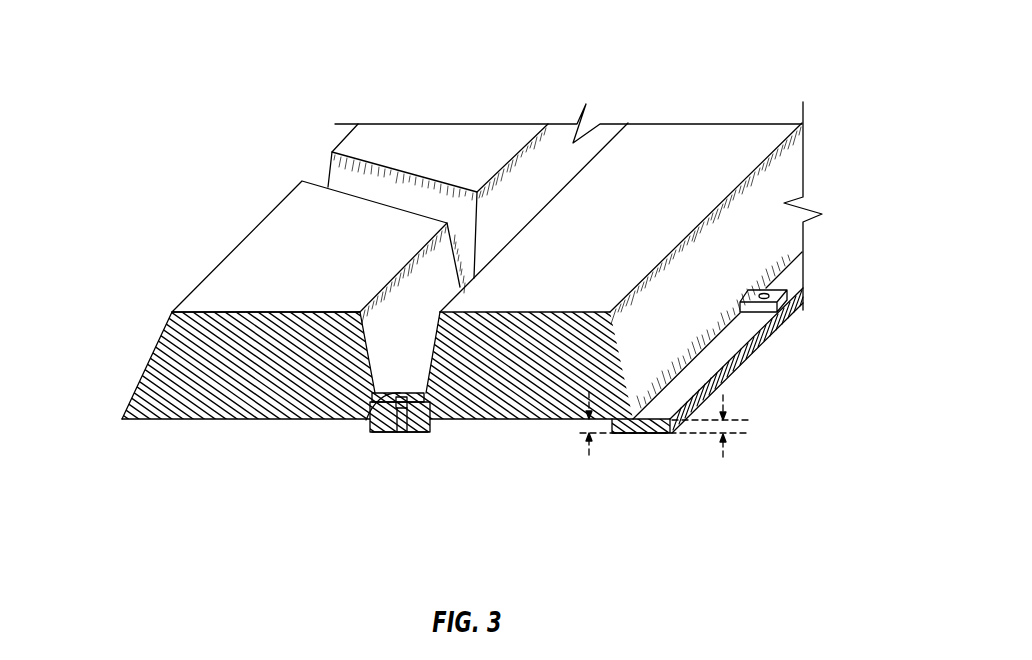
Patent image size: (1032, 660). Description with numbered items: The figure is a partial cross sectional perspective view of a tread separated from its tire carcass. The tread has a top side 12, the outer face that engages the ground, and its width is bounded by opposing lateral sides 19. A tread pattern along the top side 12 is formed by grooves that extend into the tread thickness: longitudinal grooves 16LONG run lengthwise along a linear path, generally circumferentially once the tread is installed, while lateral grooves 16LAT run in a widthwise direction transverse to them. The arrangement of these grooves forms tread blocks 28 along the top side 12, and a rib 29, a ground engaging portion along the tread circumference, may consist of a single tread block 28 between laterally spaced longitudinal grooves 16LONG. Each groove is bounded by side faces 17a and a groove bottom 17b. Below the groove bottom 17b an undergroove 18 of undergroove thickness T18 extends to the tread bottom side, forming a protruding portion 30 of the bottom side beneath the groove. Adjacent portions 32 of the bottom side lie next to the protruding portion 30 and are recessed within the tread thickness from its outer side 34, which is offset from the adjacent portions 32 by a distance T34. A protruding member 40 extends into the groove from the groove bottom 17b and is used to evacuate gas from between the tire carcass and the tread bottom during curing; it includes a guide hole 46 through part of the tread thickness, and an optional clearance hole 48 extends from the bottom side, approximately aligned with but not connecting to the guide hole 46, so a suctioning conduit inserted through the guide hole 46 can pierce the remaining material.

The top side 12 is at (305, 267).
The lateral groove 16LAT is at (318, 172).
The longitudinal groove 16LONG is at (395, 344).
The sloped side face of block 17a is at (792, 178).
The groove bottom 17b is at (694, 370).
The undergroove 18 is at (776, 326).
The lateral side 19 is at (152, 353).
The tread block 28 is at (419, 134).
The rib 29 is at (681, 120).
The protruding portion 30 is at (421, 434).
The adjacent portion 32 is at (255, 420).
The outer side 34 is at (382, 433).
The protruding member 40 is at (406, 392).
The guide hole 46 is at (366, 420).
The clearance hole 48 is at (400, 434).
The offset distance T34 is at (588, 456).
The undergroove thickness T18 is at (727, 457).